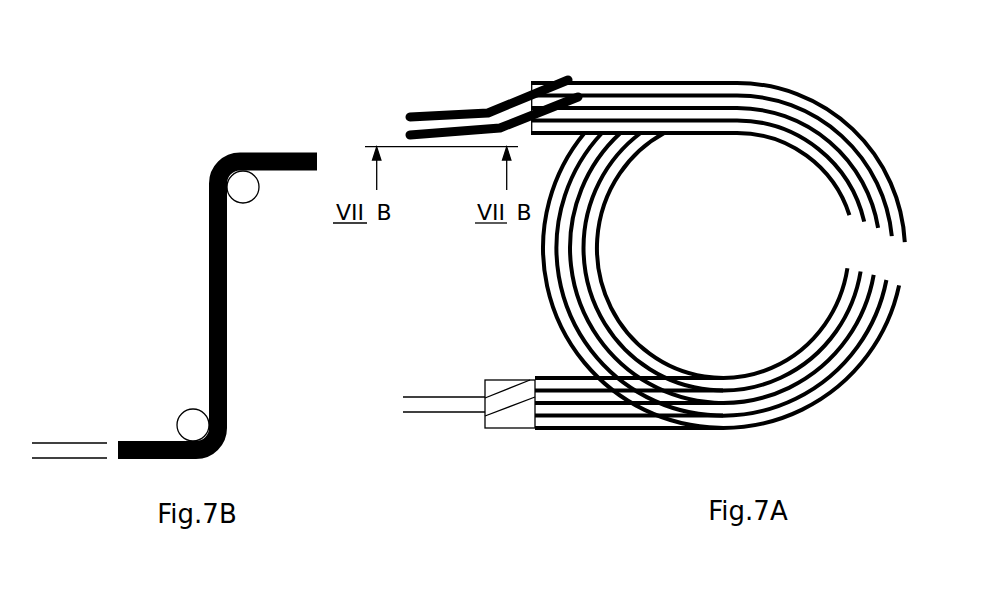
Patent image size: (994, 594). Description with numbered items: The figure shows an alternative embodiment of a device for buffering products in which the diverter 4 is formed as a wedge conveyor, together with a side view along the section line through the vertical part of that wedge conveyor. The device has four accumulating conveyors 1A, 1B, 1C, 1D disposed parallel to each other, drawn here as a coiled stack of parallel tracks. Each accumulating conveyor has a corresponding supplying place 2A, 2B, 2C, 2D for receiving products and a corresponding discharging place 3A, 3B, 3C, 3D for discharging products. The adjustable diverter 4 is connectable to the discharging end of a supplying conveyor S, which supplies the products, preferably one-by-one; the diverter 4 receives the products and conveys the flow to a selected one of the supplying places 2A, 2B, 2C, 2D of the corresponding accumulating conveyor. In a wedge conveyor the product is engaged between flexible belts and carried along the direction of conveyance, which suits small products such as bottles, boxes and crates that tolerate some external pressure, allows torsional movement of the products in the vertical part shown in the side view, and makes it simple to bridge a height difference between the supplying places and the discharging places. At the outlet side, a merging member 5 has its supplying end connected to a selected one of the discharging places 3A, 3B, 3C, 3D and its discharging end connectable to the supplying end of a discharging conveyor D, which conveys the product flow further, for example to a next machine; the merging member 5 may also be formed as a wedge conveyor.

In FIG. 7A, the accumulating conveyor 1A is at (767, 90).
In FIG. 7A, the accumulating conveyor 1B is at (793, 113).
In FIG. 7A, the accumulating conveyor 1C is at (820, 160).
In FIG. 7A, the accumulating conveyor 1D is at (848, 133).
In FIG. 7A, the supplying place 2A is at (593, 92).
In FIG. 7A, the supplying place 2B is at (620, 100).
In FIG. 7A, the supplying place 2C is at (660, 108).
In FIG. 7A, the supplying place 2D is at (700, 122).
In FIG. 7A, the discharging place 3A is at (638, 425).
In FIG. 7A, the discharging place 3B is at (600, 408).
In FIG. 7A, the discharging place 3C is at (566, 400).
In FIG. 7A, the discharging place 3D is at (556, 386).
In FIG. 7A, the diverter 4 is at (452, 108).
In FIG. 7B, the diverter 4 is at (208, 378).
In FIG. 7A, the merging member 5 is at (508, 413).
In FIG. 7A, the discharging conveyor D is at (447, 412).
In FIG. 7B, the supplying conveyor S is at (76, 450).